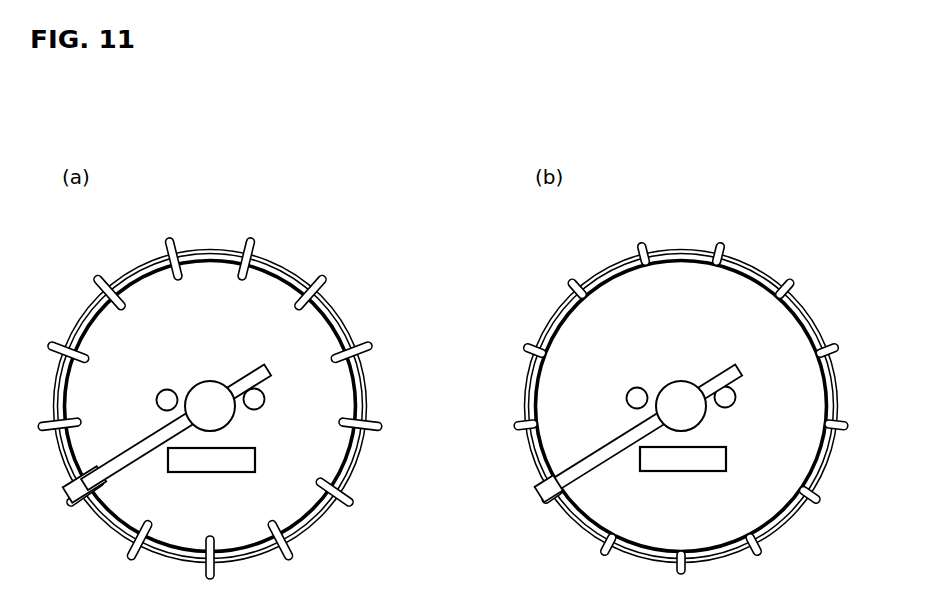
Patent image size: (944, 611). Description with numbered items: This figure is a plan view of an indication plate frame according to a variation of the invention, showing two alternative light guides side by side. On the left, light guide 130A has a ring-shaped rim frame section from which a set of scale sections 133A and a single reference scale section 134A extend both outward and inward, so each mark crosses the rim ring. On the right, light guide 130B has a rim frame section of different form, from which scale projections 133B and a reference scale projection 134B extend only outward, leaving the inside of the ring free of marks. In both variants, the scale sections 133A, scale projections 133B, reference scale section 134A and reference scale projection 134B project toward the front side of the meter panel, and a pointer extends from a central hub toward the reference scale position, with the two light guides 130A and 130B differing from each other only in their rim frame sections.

The light guide 130A is at (229, 382).
The light guide 130B is at (706, 380).
The scale sections 133A is at (288, 550).
The scale projections 133B is at (758, 551).
The reference scale section 134A is at (72, 503).
The reference scale projection 134B is at (545, 506).